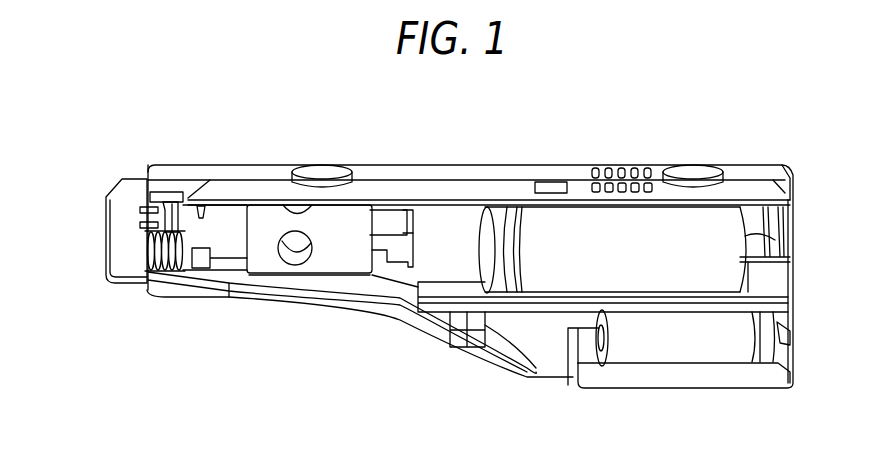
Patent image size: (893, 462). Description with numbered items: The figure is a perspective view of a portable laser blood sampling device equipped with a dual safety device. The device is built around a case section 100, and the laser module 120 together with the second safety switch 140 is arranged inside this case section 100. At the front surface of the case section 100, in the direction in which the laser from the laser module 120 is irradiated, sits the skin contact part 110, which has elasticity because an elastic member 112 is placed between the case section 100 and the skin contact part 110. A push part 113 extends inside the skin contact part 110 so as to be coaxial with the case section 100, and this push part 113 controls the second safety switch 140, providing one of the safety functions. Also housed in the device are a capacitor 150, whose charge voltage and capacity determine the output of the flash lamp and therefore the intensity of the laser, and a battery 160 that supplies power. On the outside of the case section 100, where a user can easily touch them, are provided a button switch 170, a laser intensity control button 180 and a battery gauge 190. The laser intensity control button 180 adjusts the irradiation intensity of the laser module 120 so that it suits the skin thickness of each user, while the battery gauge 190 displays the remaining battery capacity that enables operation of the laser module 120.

The case section 100 is at (250, 168).
The skin contact part 110 is at (120, 284).
The elastic member 112 is at (165, 274).
The push part 113 is at (140, 212).
The laser module 120 is at (337, 248).
The second safety switch 140 is at (172, 205).
The capacitor 150 is at (775, 240).
The battery 160 is at (788, 337).
The button switch 170 is at (322, 172).
The laser intensity control button 180 is at (693, 172).
The battery gauge 190 is at (596, 170).